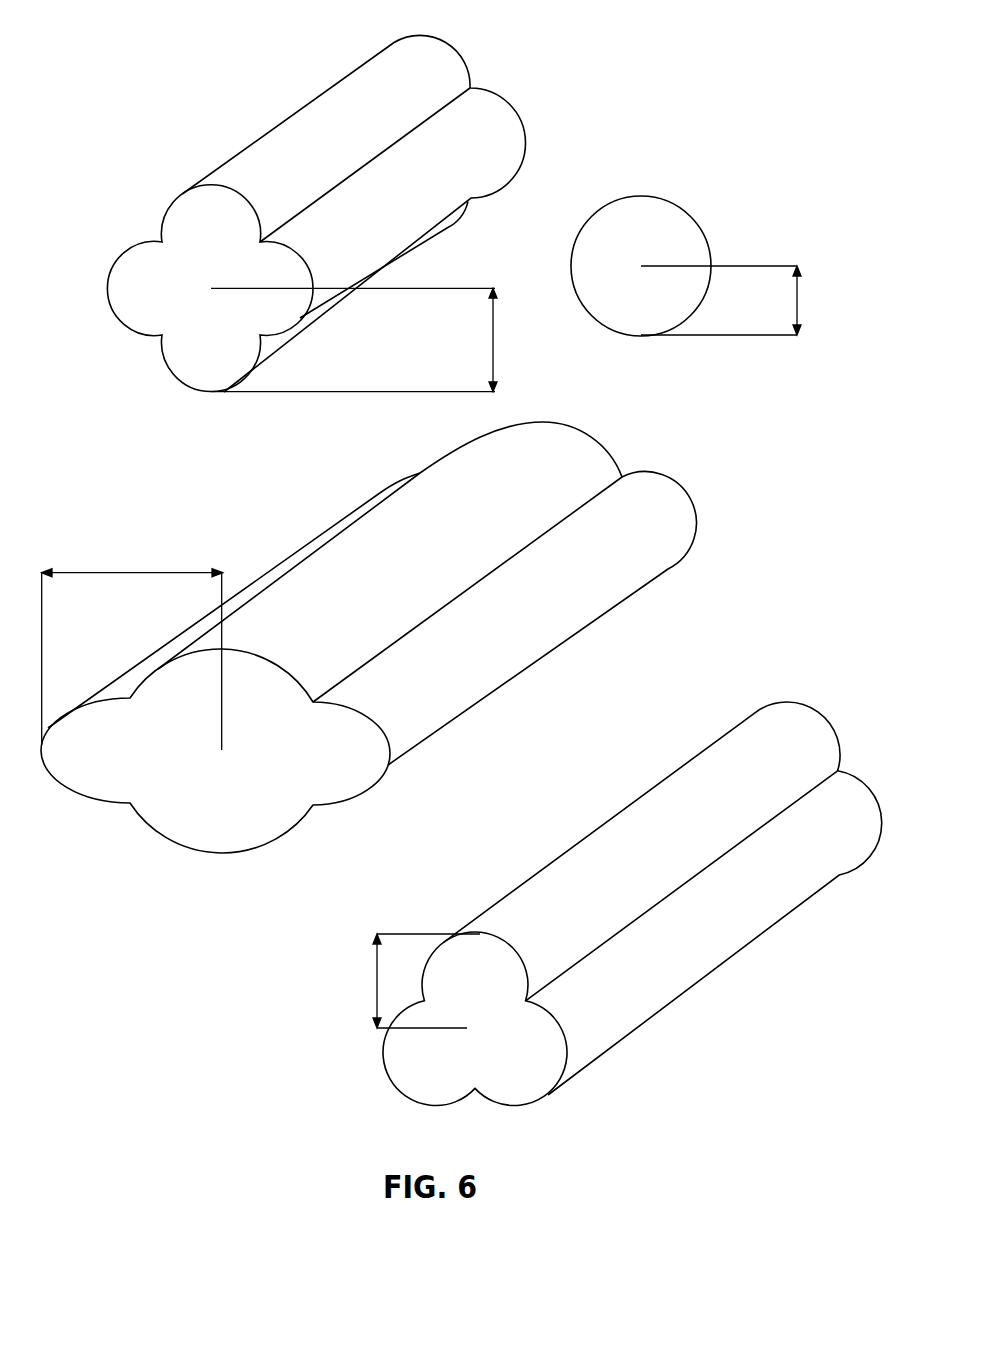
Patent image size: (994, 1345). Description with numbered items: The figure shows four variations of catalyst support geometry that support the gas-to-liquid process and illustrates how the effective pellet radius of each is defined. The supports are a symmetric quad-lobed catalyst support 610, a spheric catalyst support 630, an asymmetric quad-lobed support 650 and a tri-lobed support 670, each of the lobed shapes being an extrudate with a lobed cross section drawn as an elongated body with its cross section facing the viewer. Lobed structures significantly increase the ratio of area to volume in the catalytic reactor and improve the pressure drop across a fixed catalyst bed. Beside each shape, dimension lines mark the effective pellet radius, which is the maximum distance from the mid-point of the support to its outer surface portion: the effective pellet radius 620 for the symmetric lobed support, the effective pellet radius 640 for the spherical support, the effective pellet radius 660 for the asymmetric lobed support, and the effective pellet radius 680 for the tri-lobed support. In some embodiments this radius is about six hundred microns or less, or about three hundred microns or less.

The symmetric quad-lobed catalyst support 610 is at (296, 213).
The effective pellet radius of symmetric lobed support 620 is at (354, 339).
The spheric catalyst support 630 is at (715, 254).
The effective pellet radius of spherical support 640 is at (776, 306).
The asymmetric quad-lobed support 650 is at (360, 678).
The effective pellet radius of asymmetric lobed support 660 is at (132, 659).
The tri-lobed support 670 is at (632, 904).
The effective pellet radius of tri-lobed support 680 is at (372, 991).